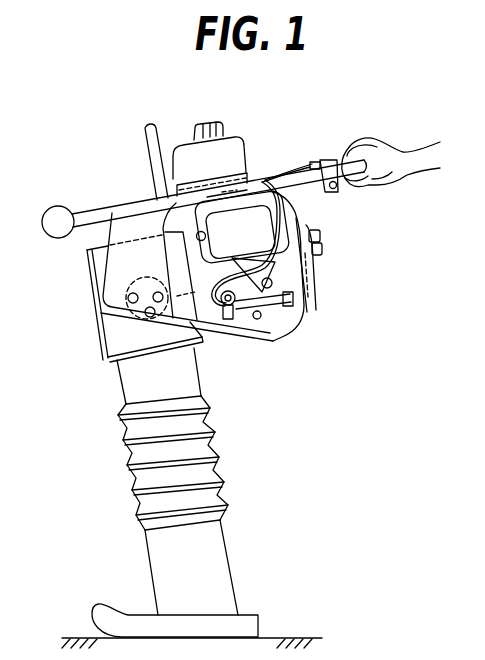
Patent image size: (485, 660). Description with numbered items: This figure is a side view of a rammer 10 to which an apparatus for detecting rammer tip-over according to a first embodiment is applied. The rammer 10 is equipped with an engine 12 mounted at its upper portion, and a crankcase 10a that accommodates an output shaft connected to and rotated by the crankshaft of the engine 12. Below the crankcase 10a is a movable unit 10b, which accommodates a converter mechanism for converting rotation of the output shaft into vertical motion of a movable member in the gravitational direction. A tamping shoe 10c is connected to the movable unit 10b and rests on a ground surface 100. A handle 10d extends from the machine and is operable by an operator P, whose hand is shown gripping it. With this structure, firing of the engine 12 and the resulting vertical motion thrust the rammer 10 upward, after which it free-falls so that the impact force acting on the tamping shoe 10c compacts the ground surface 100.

The rammer 10 is at (330, 118).
The crankcase 10a is at (92, 281).
The movable unit 10b is at (128, 466).
The tamping shoe 10c is at (100, 602).
The handle 10d is at (313, 185).
The engine 12 is at (318, 311).
The ground surface 100 is at (282, 637).
The operator P is at (414, 177).